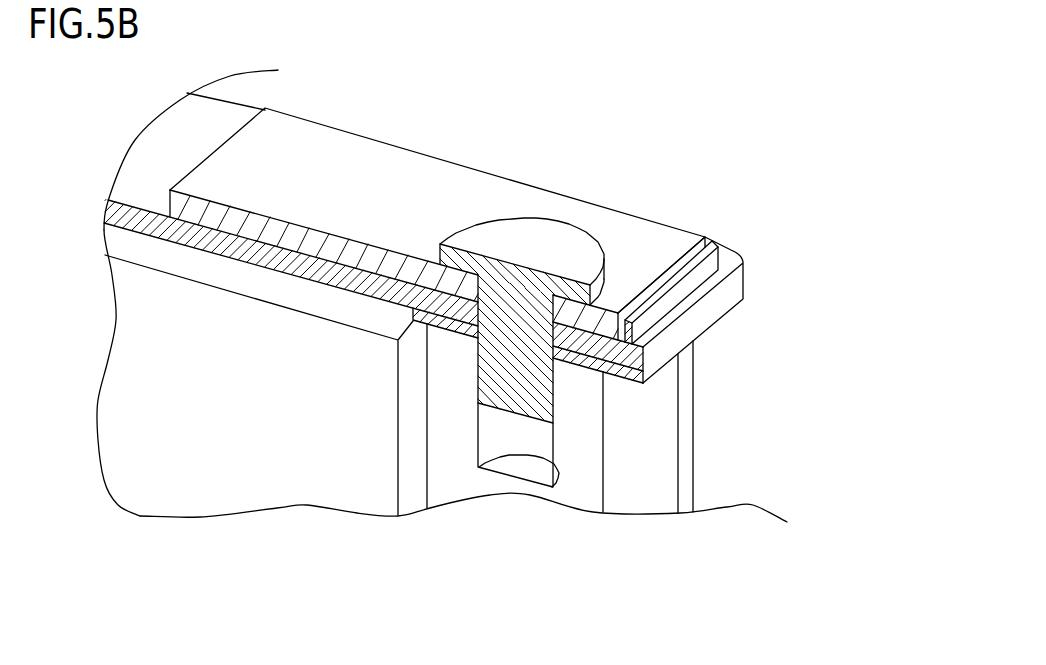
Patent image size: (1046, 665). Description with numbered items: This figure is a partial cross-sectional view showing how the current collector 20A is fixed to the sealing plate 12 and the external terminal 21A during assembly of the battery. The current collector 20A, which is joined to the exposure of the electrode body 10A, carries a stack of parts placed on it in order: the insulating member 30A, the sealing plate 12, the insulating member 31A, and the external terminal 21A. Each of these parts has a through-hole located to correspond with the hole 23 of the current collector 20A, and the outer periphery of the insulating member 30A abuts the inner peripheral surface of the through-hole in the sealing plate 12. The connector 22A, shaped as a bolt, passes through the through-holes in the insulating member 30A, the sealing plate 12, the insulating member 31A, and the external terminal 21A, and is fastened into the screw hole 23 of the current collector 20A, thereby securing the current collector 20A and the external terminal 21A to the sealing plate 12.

The electrode body 10A is at (217, 470).
The sealing plate 12 is at (162, 158).
The current collector 20A is at (582, 460).
The external terminal 21A is at (363, 160).
The connector 22A is at (533, 230).
The screw hole 23 is at (524, 437).
The insulating member 30A is at (553, 359).
The insulating member 31A is at (717, 250).